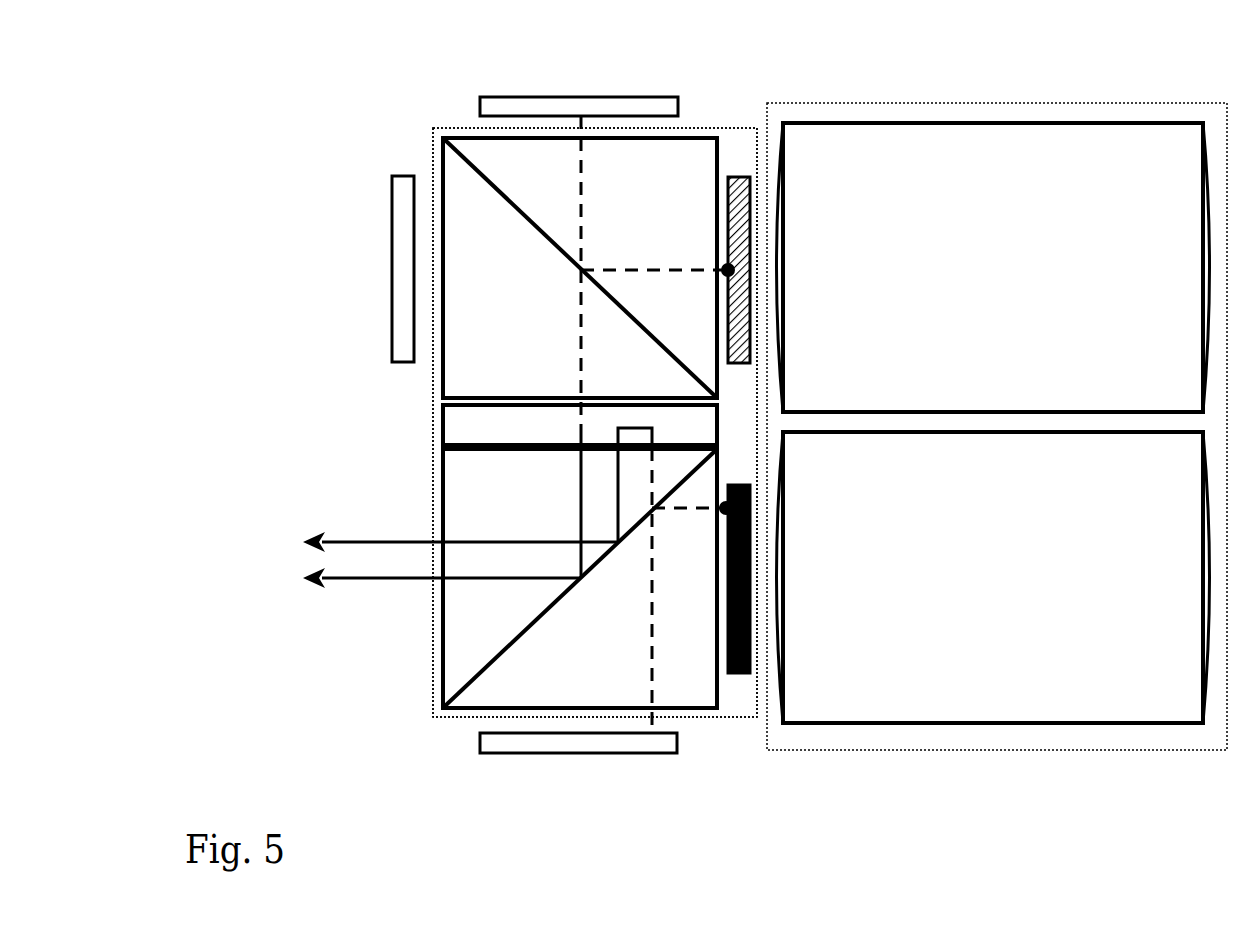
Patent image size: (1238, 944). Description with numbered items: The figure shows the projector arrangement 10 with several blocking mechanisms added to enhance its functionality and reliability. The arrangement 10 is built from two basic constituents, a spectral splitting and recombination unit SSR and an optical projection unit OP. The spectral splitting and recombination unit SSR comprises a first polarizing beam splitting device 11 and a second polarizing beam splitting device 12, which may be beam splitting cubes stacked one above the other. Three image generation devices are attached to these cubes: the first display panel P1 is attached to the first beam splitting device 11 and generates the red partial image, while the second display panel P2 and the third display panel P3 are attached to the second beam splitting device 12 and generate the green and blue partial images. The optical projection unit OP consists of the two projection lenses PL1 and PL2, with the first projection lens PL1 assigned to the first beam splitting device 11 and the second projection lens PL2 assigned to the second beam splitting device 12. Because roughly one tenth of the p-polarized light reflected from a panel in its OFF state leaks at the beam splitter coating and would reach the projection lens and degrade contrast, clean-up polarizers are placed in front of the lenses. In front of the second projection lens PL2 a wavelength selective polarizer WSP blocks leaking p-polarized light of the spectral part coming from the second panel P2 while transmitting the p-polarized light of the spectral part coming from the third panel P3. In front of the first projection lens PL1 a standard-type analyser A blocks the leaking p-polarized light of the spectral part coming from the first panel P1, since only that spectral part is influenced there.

The projector arrangement 10 is at (360, 98).
The first polarizing beam splitting device 11 is at (614, 657).
The second polarizing beam splitting device 12 is at (688, 182).
The first image generation device P1 is at (503, 744).
The second image generation device P2 is at (519, 102).
The third image generation device P3 is at (402, 185).
The wavelength selective polarizer WSP is at (738, 178).
The analyser A is at (737, 485).
The spectral splitting and recombination unit SSR is at (697, 717).
The optical projection unit OP is at (1012, 752).
The first projection lens PL1 is at (992, 656).
The second projection lens PL2 is at (992, 309).